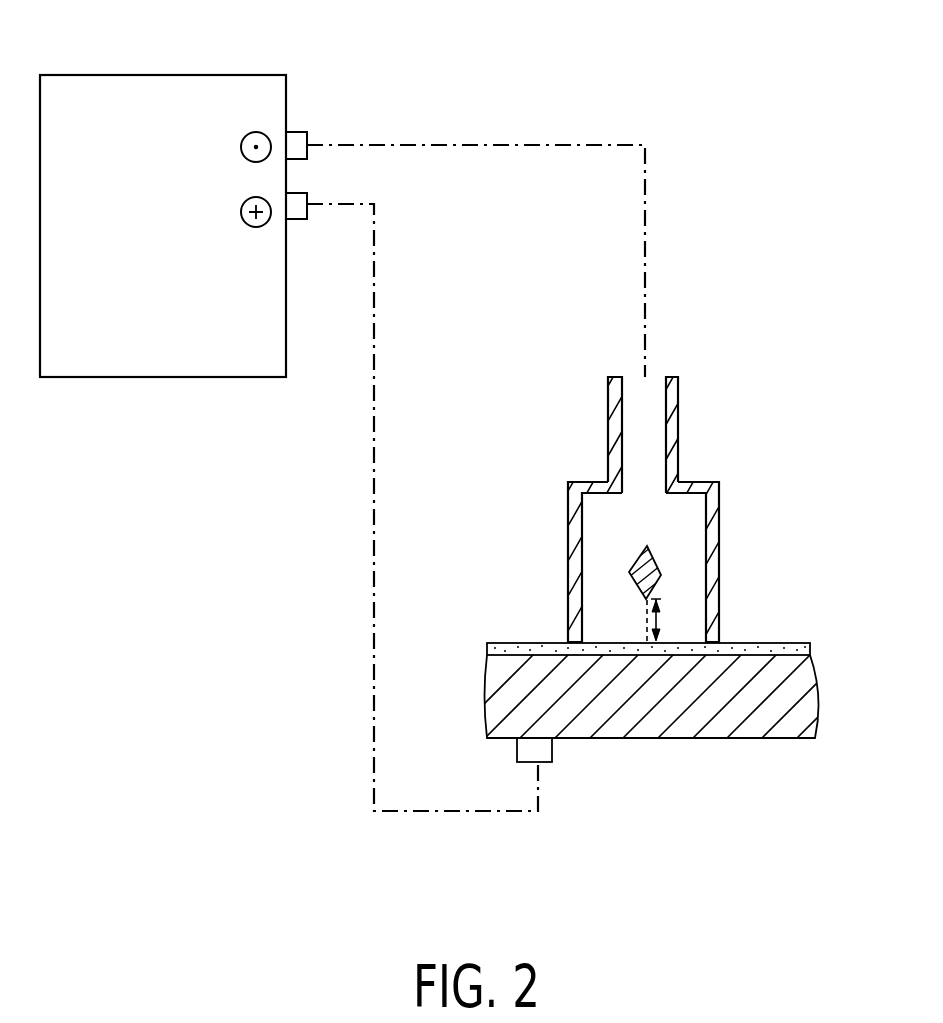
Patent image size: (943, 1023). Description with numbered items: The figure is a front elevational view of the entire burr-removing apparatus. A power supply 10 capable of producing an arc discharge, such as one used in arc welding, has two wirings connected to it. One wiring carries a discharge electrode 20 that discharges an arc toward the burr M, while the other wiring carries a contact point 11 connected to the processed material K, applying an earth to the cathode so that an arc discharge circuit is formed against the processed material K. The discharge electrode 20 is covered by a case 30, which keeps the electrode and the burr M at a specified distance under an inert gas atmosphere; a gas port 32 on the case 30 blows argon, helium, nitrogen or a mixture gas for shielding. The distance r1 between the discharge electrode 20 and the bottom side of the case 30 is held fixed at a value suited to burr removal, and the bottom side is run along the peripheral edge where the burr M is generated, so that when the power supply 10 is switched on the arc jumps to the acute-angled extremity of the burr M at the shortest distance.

The power supply 10 is at (148, 85).
The contact point 11 is at (545, 748).
The discharge electrode 20 is at (657, 567).
The case 30 is at (580, 572).
The gas port 32 is at (672, 417).
The burr M is at (806, 650).
The processed material K is at (812, 727).
The distance r1 is at (665, 620).